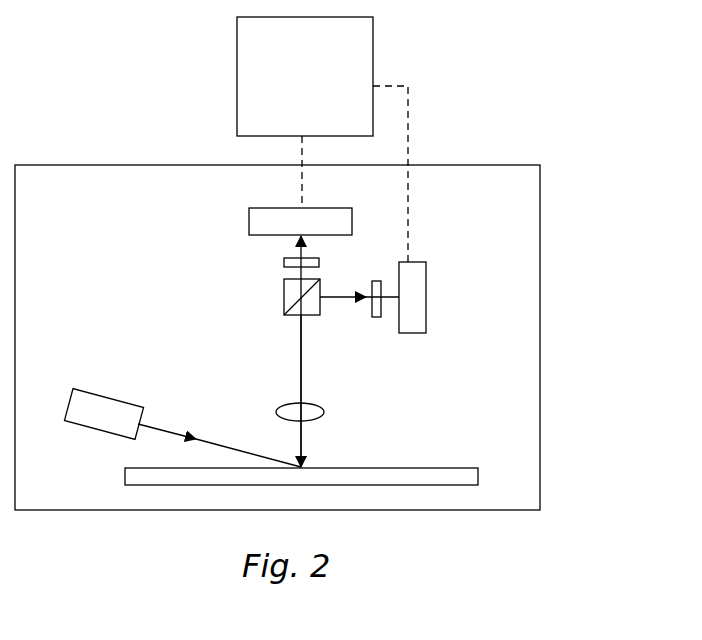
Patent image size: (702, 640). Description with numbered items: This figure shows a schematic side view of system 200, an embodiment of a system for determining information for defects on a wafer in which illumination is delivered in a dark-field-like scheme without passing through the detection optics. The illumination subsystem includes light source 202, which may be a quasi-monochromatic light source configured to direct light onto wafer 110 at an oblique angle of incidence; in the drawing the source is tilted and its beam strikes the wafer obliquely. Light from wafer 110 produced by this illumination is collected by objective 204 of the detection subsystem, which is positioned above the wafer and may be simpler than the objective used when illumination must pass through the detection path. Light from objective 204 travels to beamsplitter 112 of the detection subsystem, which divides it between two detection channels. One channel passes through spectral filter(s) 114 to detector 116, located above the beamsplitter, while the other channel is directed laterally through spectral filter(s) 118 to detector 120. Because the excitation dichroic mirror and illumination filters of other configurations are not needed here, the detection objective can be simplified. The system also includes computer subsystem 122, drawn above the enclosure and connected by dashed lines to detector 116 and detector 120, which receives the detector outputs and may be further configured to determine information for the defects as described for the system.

The system 200 is at (540, 270).
The computer subsystem 122 is at (322, 139).
The detector 116 is at (250, 225).
The spectral filter(s) 114 is at (284, 262).
The beamsplitter 112 is at (284, 297).
The spectral filter(s) 118 is at (372, 318).
The detector 120 is at (426, 278).
The light source 202 is at (110, 395).
The objective 204 is at (323, 413).
The wafer 110 is at (135, 468).